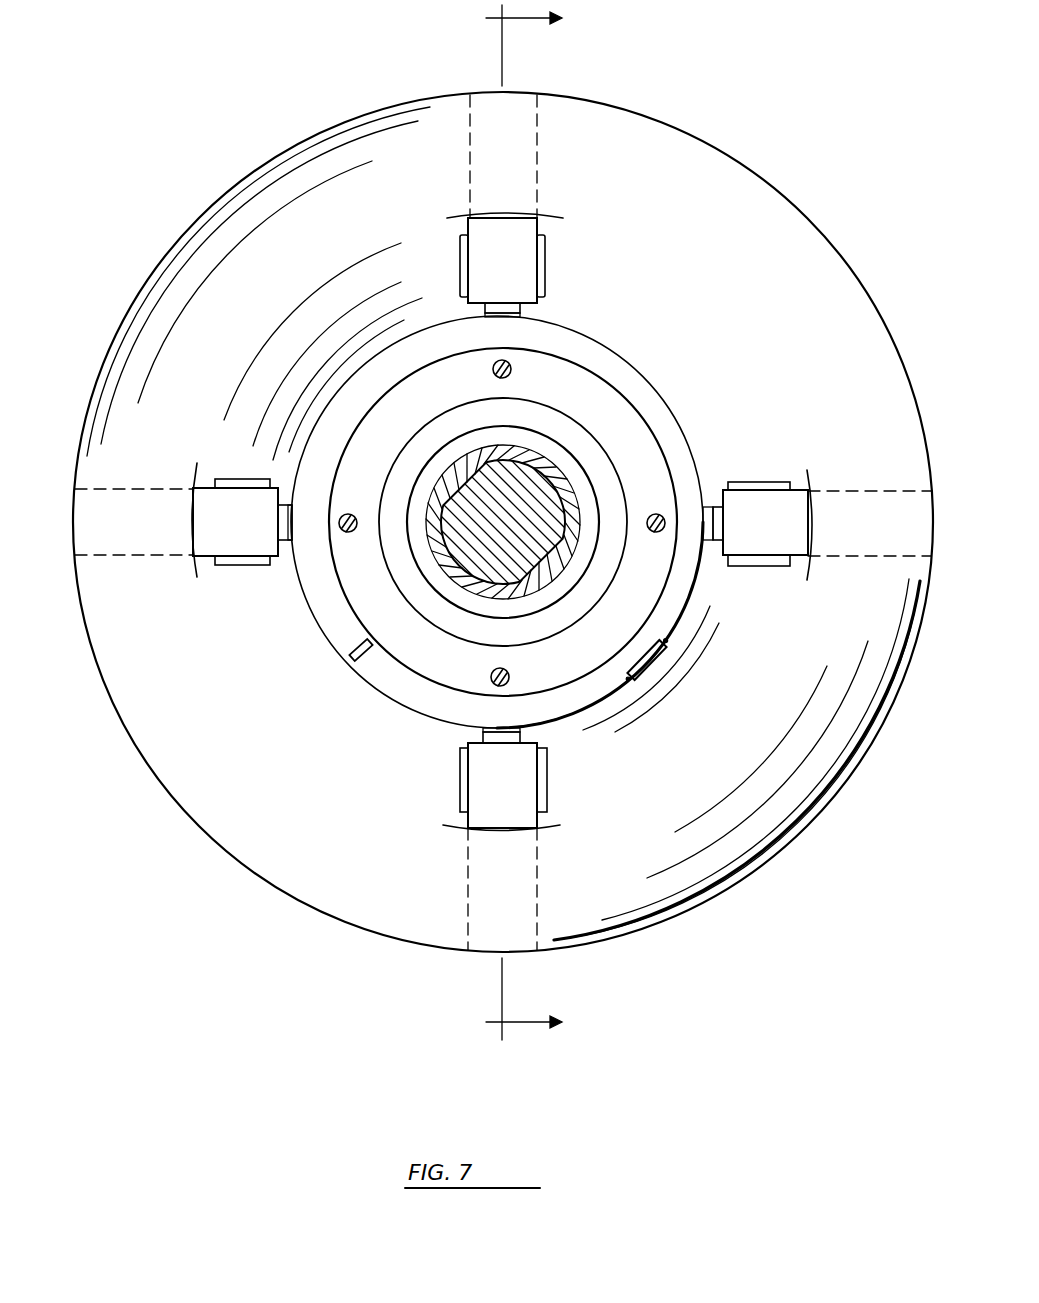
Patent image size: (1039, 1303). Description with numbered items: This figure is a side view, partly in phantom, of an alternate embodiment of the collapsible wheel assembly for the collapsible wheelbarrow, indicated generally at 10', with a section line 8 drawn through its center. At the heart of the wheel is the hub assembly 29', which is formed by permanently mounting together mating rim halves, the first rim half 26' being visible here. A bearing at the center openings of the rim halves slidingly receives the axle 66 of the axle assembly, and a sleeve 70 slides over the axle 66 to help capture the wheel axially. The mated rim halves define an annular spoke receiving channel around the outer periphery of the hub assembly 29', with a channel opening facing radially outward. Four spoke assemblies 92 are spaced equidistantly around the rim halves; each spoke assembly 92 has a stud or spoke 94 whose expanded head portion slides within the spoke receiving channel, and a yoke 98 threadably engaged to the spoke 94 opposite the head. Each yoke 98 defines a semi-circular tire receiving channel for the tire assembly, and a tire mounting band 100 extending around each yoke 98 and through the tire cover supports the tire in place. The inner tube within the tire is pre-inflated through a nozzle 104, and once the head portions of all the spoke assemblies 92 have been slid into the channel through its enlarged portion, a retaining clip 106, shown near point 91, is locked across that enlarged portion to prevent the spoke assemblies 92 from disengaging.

The section line 8 is at (535, 522).
The clutch disc assembly 10' is at (503, 520).
The first rim half 26' is at (525, 522).
The hub assembly 29' is at (497, 524).
The axle 66 is at (495, 529).
The sleeve 70 is at (491, 458).
The pivot point 91 is at (663, 641).
The spoke assembly 92 is at (717, 543).
The spoke 94 is at (714, 505).
The yoke 98 is at (227, 479).
The tire mounting band 100 is at (235, 537).
The nozzle 104 is at (352, 650).
The retaining clip 106 is at (652, 668).